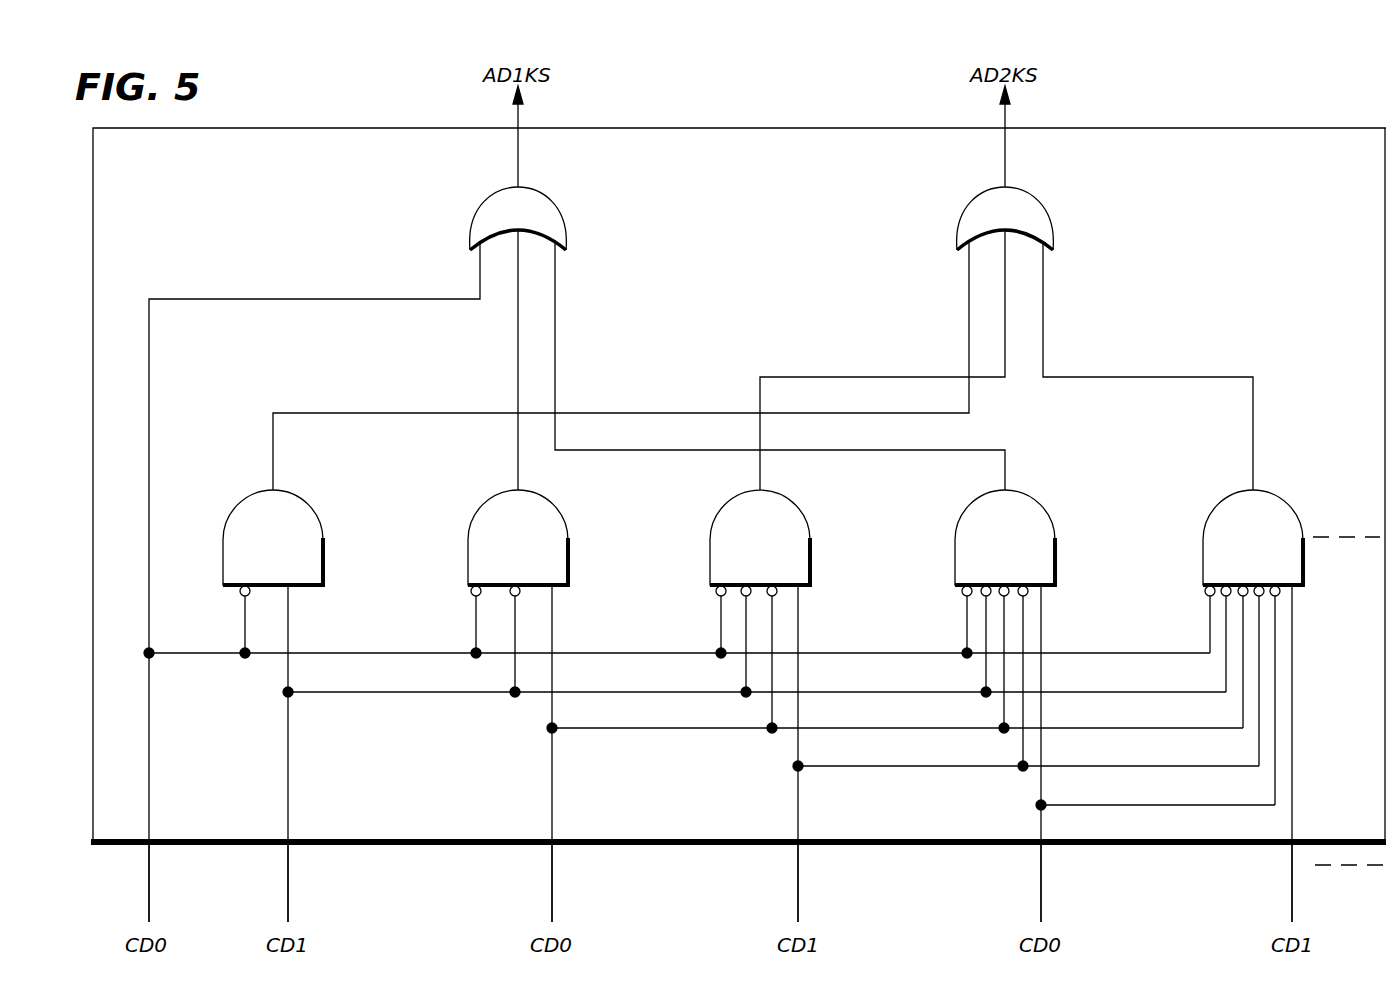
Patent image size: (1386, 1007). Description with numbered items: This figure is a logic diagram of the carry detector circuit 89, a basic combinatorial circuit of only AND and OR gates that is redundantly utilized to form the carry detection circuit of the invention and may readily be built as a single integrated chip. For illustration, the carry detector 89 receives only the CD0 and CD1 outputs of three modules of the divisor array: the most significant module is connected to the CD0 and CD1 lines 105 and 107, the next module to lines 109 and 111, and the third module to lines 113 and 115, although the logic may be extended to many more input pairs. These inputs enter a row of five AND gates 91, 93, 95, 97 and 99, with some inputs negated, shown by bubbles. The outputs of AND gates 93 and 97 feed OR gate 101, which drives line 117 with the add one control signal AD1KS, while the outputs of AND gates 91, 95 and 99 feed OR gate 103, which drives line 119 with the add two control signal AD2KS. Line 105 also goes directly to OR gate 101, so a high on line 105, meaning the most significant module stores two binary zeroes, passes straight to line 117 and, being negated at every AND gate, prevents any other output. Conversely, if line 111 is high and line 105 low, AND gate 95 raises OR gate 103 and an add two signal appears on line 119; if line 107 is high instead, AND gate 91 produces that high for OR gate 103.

The carry detector circuit 89 is at (1320, 128).
The AND gate 91 is at (244, 502).
The AND gate 93 is at (488, 502).
The AND gate 95 is at (733, 502).
The AND gate 97 is at (978, 502).
The AND gate 99 is at (1218, 502).
The OR gate 101 is at (492, 200).
The OR gate 103 is at (1045, 200).
The CD0 line 105 is at (148, 886).
The CD1 line 107 is at (287, 886).
The CD0 line 109 is at (551, 886).
The CD1 line 111 is at (797, 886).
The CD0 line 113 is at (1040, 886).
The CD1 line 115 is at (1291, 886).
The line 117 is at (516, 96).
The line 119 is at (1008, 96).